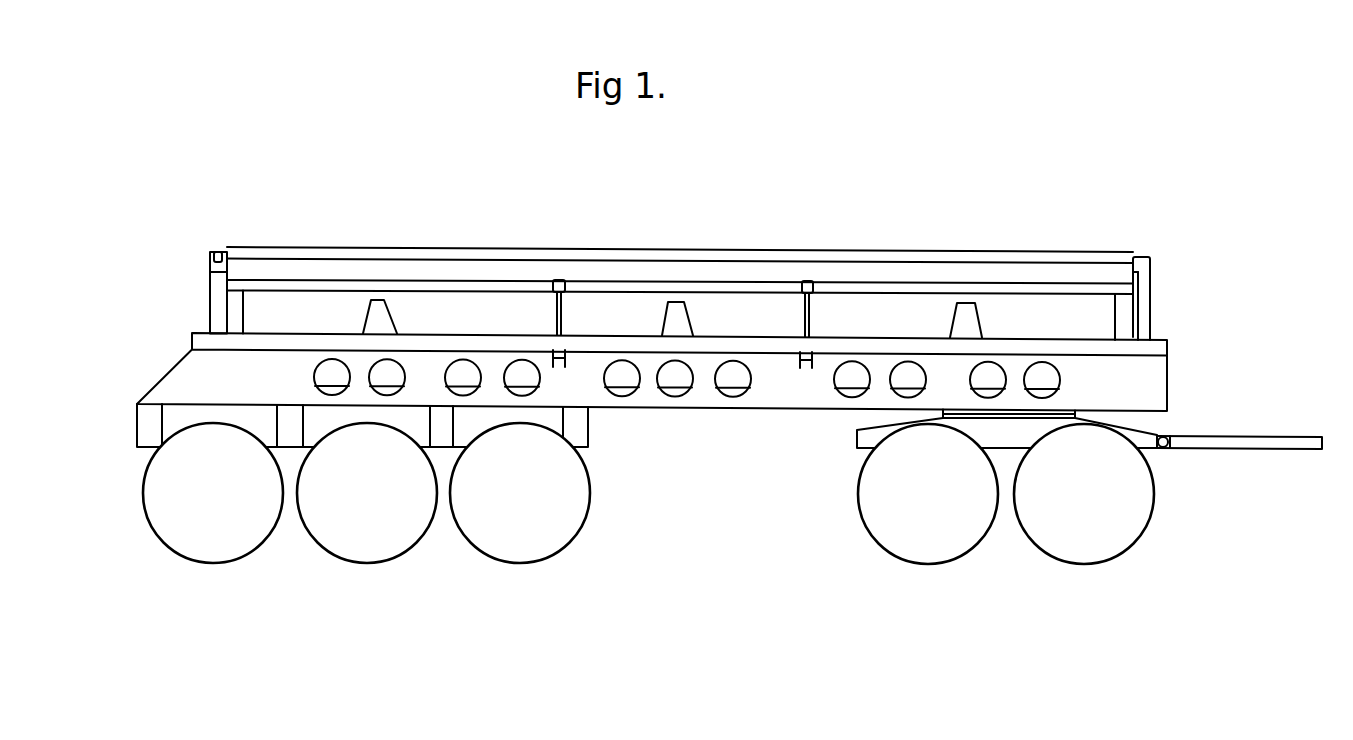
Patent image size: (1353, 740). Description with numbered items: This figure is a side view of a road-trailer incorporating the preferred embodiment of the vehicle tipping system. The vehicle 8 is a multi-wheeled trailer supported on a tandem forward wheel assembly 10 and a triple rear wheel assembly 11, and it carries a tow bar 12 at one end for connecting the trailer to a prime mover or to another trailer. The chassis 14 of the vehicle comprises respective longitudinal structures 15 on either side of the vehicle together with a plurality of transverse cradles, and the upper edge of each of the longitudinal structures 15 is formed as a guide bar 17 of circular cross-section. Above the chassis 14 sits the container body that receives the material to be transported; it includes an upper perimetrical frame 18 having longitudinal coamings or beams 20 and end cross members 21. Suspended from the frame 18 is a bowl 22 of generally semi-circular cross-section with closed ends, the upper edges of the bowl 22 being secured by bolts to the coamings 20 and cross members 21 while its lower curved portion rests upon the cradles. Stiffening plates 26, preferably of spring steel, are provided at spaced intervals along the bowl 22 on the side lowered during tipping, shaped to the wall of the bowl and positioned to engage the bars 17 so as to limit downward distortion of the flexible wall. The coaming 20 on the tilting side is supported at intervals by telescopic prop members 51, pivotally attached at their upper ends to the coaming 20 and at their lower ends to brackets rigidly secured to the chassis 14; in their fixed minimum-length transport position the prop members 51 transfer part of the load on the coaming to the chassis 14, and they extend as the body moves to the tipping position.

The vehicle 8 is at (666, 263).
The tandem forward wheel assembly 10 is at (1015, 548).
The triple rear wheel assembly 11 is at (325, 557).
The tow bar 12 is at (1232, 432).
The chassis 14 is at (800, 410).
The longitudinal structures 15 is at (647, 390).
The guide bar 17 is at (1013, 347).
The upper perimetrical frame 18 is at (666, 263).
The longitudinal coamings 20 is at (632, 265).
The end cross members 21 is at (215, 250).
The bowl 22 is at (463, 320).
The stiffening plates 26 is at (378, 322).
The telescopic prop members 51 is at (550, 302).